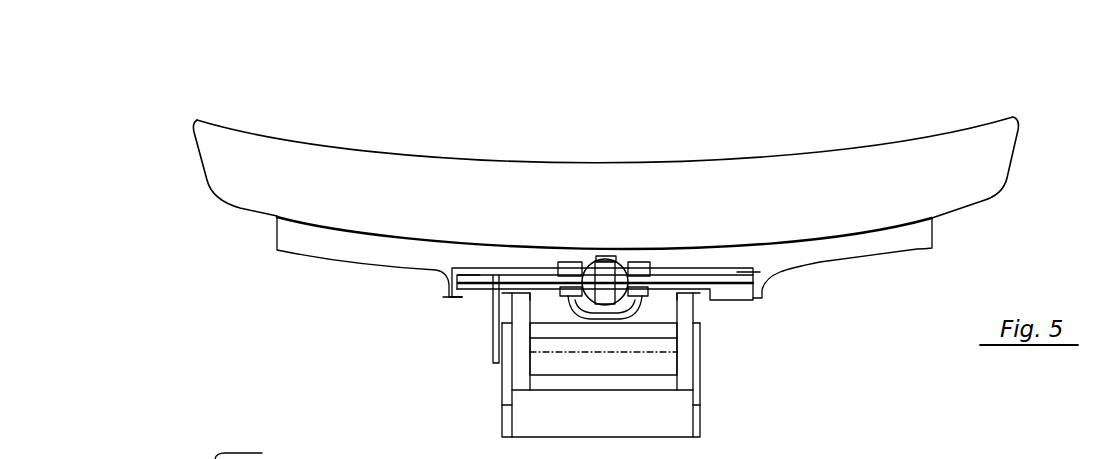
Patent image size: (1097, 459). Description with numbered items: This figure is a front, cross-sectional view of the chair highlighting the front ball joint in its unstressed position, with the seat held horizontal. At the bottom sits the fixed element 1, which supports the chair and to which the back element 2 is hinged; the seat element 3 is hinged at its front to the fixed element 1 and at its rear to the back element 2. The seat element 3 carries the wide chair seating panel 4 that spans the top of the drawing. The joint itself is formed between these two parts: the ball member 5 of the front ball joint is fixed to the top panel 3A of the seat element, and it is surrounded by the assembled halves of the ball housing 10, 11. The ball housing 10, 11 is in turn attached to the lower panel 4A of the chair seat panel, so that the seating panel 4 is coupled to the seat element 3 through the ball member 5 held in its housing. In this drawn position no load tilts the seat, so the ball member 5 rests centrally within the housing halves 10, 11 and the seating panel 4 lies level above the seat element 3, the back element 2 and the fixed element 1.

The fixed element 1 is at (495, 387).
The back element 2 is at (690, 353).
The seat element 3 is at (487, 318).
The top panel of the seat element 3A is at (476, 268).
The chair seating panel 4 is at (605, 175).
The lower panel of the chair seat panel 4A is at (290, 231).
The ball member 5 is at (581, 268).
The ball housing half 10 is at (579, 304).
The ball housing half 11 is at (613, 248).